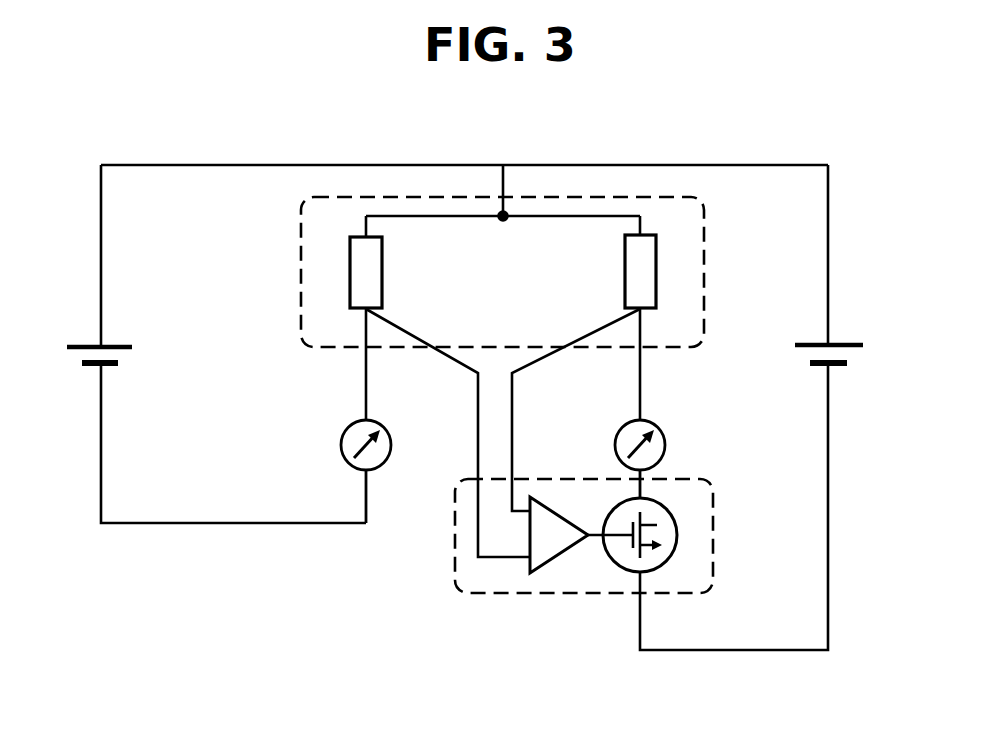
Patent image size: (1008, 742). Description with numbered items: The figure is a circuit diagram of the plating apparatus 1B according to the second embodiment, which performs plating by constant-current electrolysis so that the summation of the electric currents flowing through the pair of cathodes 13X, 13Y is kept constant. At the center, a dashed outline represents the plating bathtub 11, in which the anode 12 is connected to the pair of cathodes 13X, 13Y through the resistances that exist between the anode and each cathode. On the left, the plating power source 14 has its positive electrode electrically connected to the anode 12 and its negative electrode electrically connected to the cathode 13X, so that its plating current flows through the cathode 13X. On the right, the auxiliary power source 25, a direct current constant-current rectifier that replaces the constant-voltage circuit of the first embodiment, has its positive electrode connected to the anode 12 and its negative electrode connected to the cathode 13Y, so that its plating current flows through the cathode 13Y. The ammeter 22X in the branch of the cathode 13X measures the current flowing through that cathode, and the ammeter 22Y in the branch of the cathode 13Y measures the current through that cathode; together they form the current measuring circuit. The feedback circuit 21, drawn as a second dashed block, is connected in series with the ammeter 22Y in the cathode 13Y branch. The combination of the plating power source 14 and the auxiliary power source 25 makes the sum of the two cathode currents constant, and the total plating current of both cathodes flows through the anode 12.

The plating apparatus 1B is at (736, 117).
The plating bathtub 11 is at (704, 236).
The anode 12 is at (505, 214).
The cathode 13X is at (362, 311).
The cathode 13Y is at (644, 311).
The plating power source 14 is at (90, 346).
The auxiliary power source 25 is at (845, 345).
The ammeter 22X is at (341, 445).
The ammeter 22Y is at (665, 441).
The feedback circuit 21 is at (714, 520).